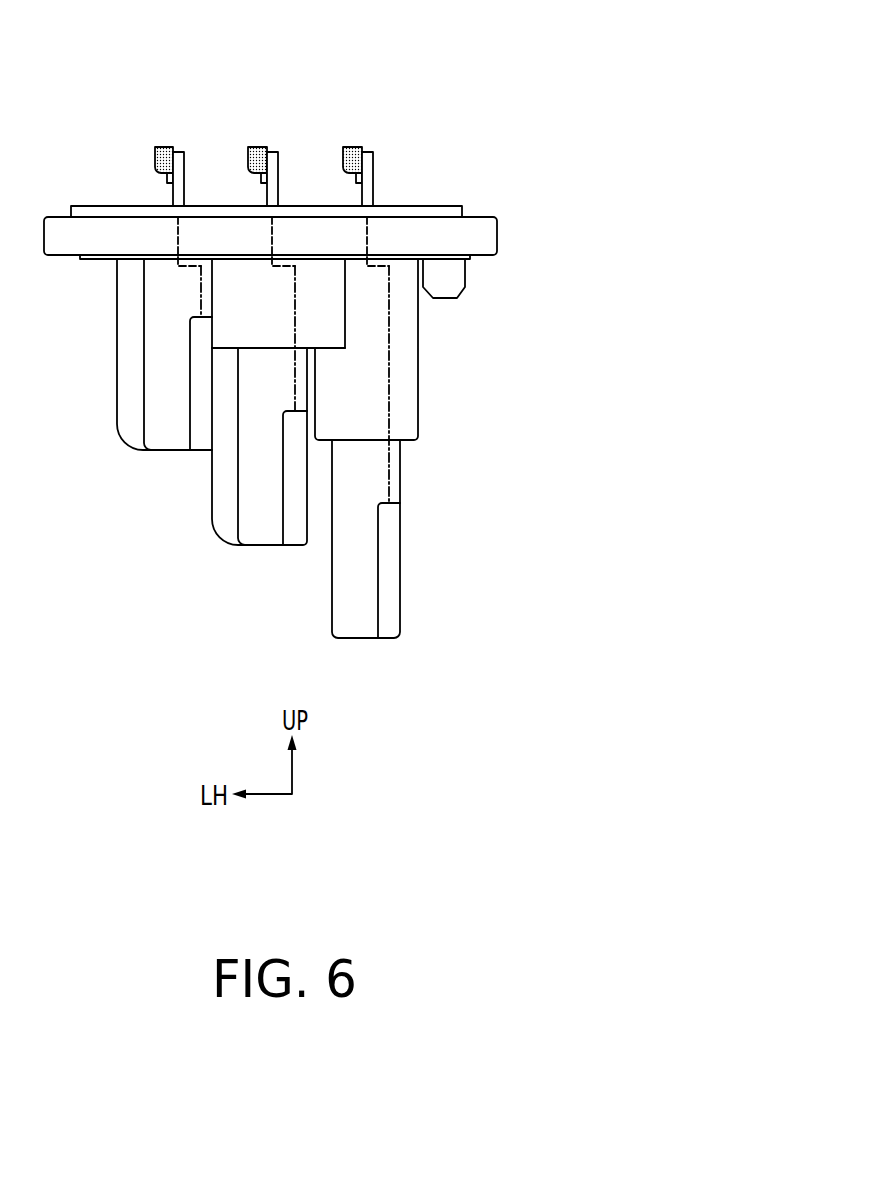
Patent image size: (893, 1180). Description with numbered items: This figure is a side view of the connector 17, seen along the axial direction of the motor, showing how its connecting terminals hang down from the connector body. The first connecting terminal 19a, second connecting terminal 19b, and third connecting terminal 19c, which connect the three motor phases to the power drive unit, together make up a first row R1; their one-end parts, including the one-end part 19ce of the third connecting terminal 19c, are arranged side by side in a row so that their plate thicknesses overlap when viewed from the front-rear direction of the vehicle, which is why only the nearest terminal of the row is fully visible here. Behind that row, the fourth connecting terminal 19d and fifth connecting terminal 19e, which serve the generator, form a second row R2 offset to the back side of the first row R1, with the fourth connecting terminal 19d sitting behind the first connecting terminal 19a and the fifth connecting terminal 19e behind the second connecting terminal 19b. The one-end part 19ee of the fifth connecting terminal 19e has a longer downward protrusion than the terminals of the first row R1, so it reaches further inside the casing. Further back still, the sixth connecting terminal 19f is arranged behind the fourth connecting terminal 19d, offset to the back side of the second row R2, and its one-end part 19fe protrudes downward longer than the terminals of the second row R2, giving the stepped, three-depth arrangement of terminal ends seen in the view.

The connector 17 is at (453, 205).
The first connecting terminal 19a is at (165, 426).
The second connecting terminal 19b is at (165, 426).
The third connecting terminal 19c is at (227, 310).
The fourth connecting terminal 19d is at (283, 472).
The fifth connecting terminal 19e is at (313, 375).
The sixth connecting terminal 19f is at (422, 448).
The one-end part of the third connecting terminal 19ce is at (200, 440).
The one-end part of the fifth connecting terminal 19ee is at (292, 538).
The one-end part of the sixth connecting terminal 19fe is at (393, 594).
The first row R1 is at (168, 464).
The second row R2 is at (262, 561).